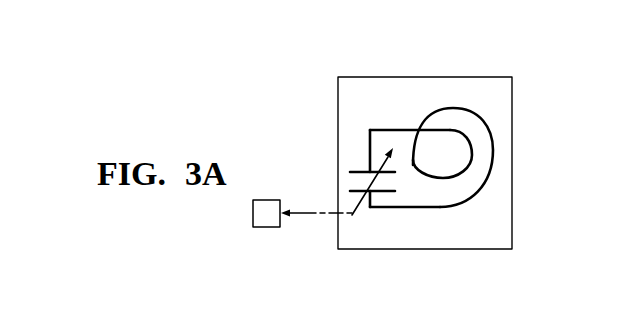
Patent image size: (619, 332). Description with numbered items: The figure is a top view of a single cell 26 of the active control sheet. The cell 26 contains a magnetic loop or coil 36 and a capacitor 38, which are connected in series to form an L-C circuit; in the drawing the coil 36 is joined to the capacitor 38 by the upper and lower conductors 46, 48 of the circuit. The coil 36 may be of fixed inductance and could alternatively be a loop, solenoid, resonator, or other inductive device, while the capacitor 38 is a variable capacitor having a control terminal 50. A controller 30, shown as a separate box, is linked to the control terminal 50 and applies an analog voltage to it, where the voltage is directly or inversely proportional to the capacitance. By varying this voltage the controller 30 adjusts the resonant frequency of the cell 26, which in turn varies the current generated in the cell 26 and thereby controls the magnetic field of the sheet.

The cell 26 is at (534, 75).
The controller 30 is at (268, 200).
The coil 36 is at (493, 144).
The capacitor 38 is at (366, 208).
The first conductor 46 is at (393, 130).
The second conductor 48 is at (403, 207).
The control terminal 50 is at (316, 206).